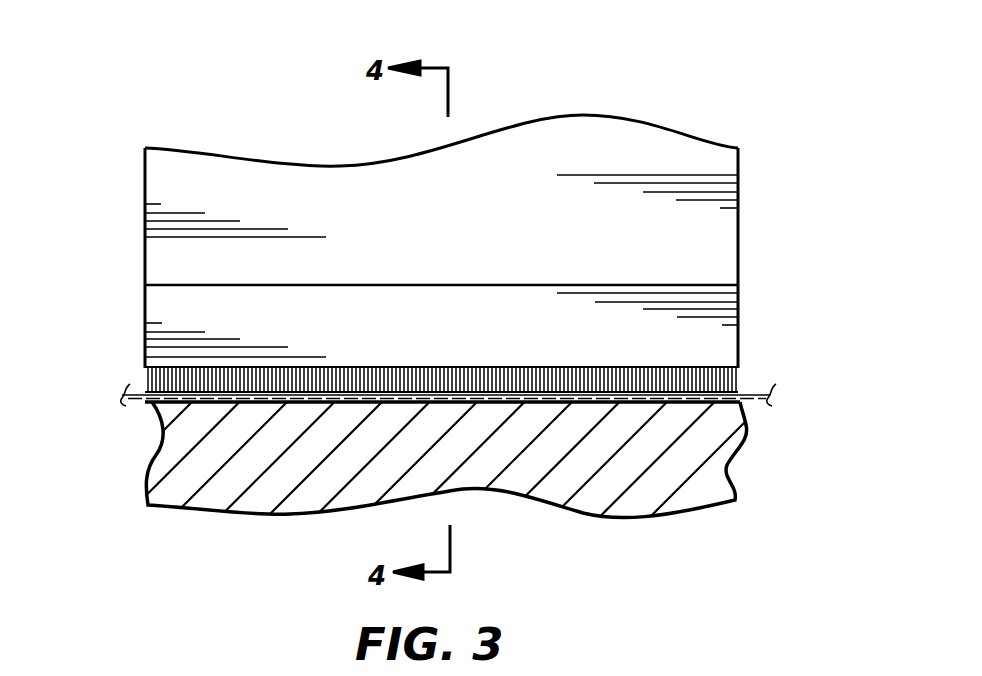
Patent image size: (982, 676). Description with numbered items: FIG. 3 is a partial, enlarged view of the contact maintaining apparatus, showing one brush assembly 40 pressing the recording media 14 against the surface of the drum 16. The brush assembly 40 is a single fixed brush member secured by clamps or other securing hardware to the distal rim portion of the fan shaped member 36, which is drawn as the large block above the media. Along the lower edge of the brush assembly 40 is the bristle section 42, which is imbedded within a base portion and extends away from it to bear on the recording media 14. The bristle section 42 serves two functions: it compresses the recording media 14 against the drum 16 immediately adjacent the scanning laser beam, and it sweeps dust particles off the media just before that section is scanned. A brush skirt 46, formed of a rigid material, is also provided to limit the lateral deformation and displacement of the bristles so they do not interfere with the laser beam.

The recording media 14 is at (750, 390).
The drum 16 is at (720, 428).
The fan shaped member 36 is at (687, 150).
The brush assembly 40 is at (808, 306).
The bristle section 42 is at (160, 383).
The brush skirt 46 is at (167, 305).